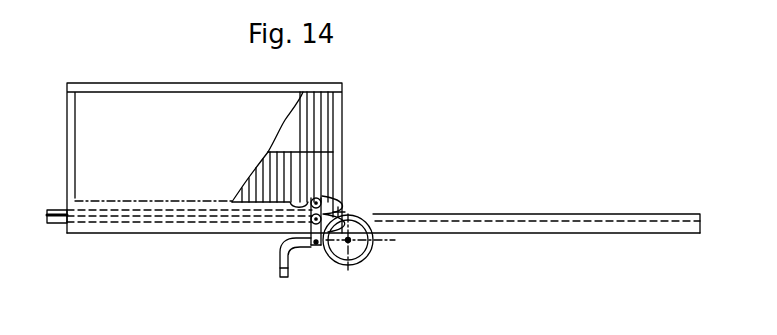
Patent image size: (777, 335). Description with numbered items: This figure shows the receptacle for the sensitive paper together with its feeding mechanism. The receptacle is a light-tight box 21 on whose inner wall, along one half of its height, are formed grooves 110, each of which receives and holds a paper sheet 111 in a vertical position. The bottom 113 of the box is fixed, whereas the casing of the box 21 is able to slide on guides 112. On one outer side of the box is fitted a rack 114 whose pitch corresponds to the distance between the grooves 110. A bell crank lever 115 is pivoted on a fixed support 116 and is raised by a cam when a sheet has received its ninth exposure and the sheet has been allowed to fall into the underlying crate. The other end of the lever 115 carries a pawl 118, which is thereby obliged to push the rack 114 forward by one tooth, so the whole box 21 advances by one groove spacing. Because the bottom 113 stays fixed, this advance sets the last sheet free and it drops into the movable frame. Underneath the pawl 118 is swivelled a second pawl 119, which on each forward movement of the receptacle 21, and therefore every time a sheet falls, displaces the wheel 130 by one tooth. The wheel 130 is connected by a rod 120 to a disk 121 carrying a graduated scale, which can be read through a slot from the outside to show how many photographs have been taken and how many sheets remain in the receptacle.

The light-tight box 21 is at (73, 145).
The bottom 113 is at (59, 210).
The paper sheet 111 is at (315, 124).
The grooves 110 is at (290, 159).
The pawl 118 is at (320, 200).
The rack 114 is at (343, 212).
The pawl 119 is at (309, 220).
The fixed support 116 is at (322, 247).
The bell crank lever 115 is at (287, 252).
The wheel 130 is at (350, 254).
The disk 121 is at (366, 257).
The rod 120 is at (352, 242).
The guides 112 is at (532, 221).